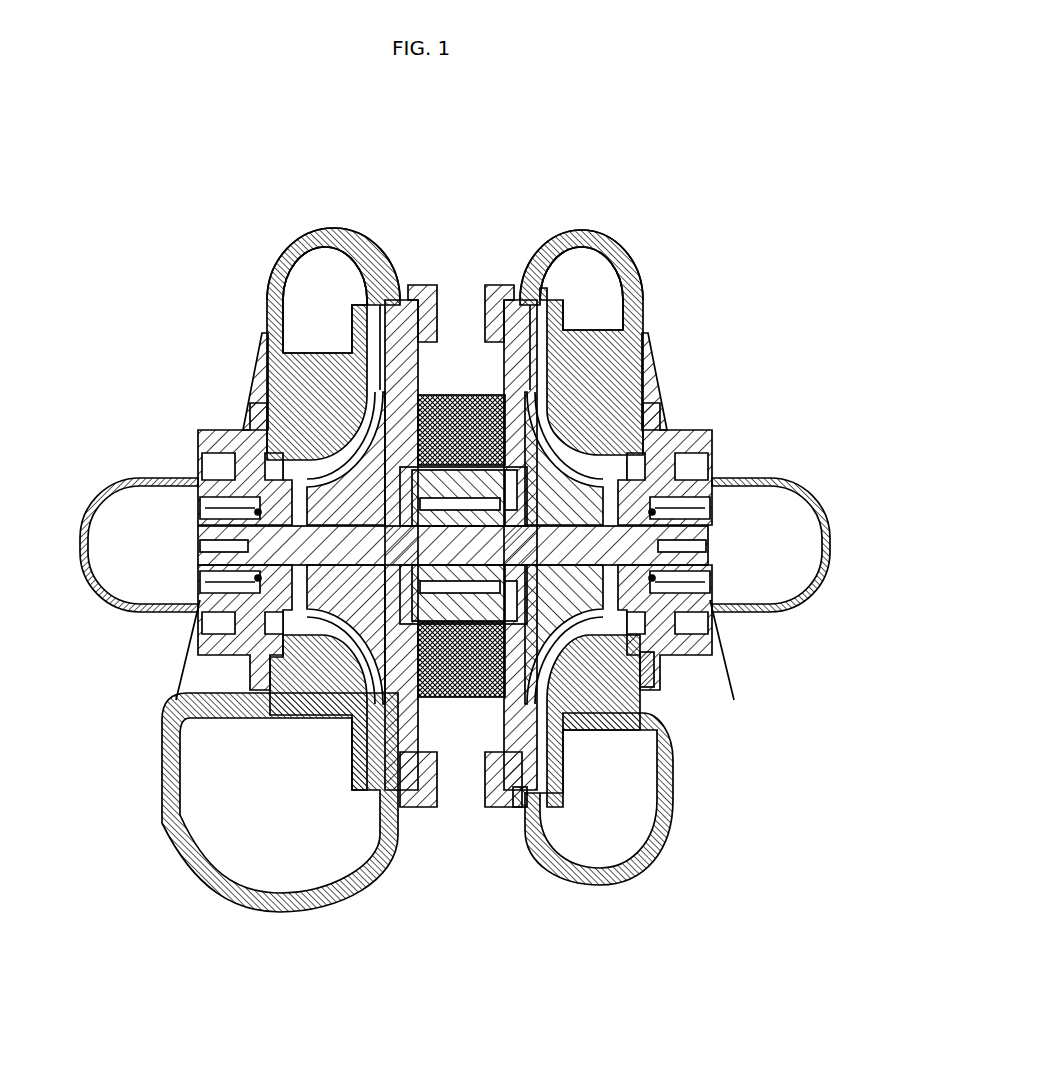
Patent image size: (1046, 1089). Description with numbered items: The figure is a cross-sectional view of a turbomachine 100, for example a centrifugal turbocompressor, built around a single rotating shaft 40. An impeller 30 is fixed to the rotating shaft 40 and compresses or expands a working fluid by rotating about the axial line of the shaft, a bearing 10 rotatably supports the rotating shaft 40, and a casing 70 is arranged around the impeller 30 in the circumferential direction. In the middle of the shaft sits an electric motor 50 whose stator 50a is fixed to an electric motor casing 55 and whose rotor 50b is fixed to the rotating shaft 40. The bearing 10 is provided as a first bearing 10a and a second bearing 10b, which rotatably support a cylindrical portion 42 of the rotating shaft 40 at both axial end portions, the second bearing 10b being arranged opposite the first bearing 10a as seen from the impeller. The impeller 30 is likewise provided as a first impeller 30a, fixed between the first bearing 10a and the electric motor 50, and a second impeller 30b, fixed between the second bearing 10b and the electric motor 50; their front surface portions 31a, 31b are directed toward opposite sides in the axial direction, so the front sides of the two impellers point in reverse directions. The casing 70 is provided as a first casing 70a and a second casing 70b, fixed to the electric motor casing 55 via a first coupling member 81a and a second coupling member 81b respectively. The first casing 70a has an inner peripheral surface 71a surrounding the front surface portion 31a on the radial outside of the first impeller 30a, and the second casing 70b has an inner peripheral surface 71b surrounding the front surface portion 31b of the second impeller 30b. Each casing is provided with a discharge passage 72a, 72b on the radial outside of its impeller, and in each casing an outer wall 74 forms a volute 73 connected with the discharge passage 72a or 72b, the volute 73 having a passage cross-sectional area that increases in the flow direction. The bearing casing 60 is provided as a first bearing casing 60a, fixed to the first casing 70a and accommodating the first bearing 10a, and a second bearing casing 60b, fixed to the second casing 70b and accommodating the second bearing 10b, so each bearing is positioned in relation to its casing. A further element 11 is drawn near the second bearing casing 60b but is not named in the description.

The turbomachine 100 is at (687, 130).
The bearing 10 is at (455, 505).
The first bearing 10a is at (198, 477).
The second bearing 10b is at (710, 478).
The fastening member 11 is at (672, 660).
The impeller 30 is at (424, 795).
The first impeller 30a is at (281, 795).
The second impeller 30b is at (605, 792).
The front surface portion 31a is at (312, 650).
The front surface portion 31b is at (598, 748).
The rotating shaft 40 is at (405, 640).
The cylindrical portion 42 is at (222, 485).
The electric motor 50 is at (463, 708).
The stator 50a is at (420, 580).
The rotor 50b is at (462, 600).
The electric motor casing 55 is at (462, 430).
The bearing casing 60 is at (474, 564).
The first bearing casing 60a is at (233, 440).
The second bearing casing 60b is at (696, 655).
The casing 70 is at (453, 434).
The first casing 70a is at (265, 435).
The second casing 70b is at (648, 434).
The inner peripheral surface 71a is at (305, 375).
The inner peripheral surface 71b is at (630, 318).
The discharge passage 72a is at (379, 319).
The discharge passage 72b is at (547, 300).
The volute 73 is at (339, 285).
The outer wall 74 is at (280, 265).
The first coupling member 81a is at (425, 298).
The second coupling member 81b is at (492, 298).